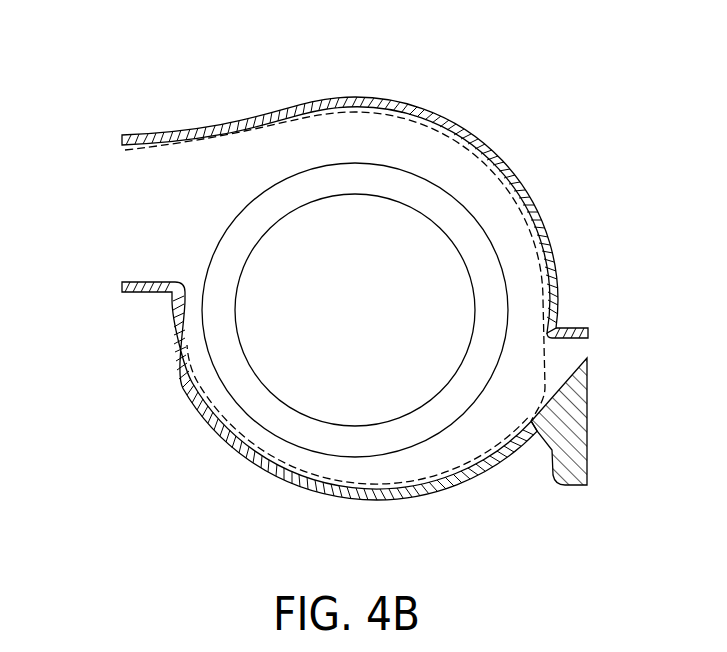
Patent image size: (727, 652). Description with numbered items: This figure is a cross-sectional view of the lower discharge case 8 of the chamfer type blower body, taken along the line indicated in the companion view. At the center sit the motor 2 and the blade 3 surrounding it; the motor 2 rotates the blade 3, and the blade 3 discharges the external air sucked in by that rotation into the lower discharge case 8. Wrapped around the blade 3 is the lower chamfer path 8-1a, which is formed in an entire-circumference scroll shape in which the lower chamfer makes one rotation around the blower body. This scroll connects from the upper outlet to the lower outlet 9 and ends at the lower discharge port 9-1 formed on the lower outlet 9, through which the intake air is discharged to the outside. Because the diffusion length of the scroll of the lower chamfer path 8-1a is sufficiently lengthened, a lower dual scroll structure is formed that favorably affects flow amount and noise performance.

The motor 2 is at (347, 324).
The blade 3 is at (448, 203).
The lower discharge case 8 is at (402, 113).
The lower chamfer path 8-1a is at (545, 350).
The lower outlet 9 is at (138, 295).
The lower discharge port 9-1 is at (148, 215).